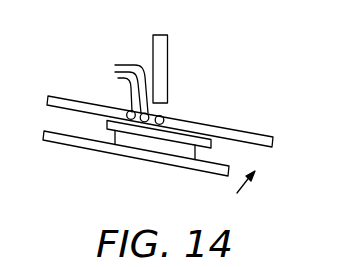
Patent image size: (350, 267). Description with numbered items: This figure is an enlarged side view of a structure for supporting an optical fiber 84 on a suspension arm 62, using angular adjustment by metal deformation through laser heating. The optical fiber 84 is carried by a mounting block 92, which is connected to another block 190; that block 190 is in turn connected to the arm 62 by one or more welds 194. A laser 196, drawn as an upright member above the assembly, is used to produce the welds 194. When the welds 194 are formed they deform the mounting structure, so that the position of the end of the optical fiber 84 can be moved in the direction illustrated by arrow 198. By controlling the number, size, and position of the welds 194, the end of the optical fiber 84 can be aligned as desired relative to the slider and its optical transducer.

The suspension arm 62 is at (231, 128).
The optical fiber 84 is at (93, 148).
The mounting block 92 is at (148, 150).
The block 190 is at (190, 128).
The welds 194 is at (121, 91).
The laser 196 is at (168, 53).
The arrow 198 is at (243, 188).